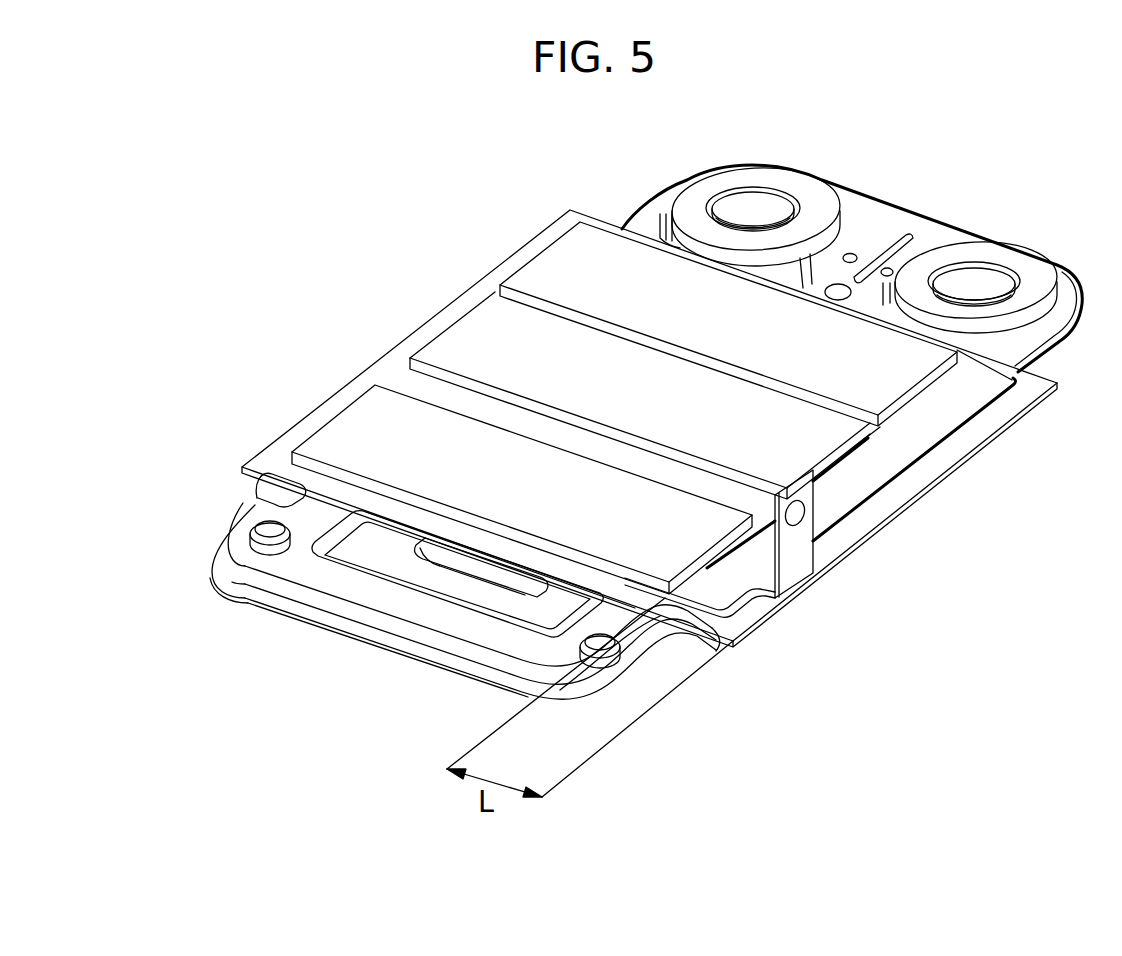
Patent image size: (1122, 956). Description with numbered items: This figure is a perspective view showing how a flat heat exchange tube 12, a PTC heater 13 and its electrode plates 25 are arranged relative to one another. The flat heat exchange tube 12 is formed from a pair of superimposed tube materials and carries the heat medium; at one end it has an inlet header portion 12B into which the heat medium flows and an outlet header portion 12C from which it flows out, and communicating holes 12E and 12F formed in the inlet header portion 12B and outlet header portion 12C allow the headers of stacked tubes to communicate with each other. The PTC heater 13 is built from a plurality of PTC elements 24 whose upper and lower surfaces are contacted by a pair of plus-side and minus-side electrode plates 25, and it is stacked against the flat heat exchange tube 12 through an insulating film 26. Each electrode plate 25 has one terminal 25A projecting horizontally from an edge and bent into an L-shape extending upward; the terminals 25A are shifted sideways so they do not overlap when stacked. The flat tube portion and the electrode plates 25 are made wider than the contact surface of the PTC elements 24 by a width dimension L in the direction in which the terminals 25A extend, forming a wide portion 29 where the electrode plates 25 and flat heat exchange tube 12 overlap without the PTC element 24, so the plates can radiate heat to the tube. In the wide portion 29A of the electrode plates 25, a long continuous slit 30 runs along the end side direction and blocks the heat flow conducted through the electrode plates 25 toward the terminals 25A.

The flat heat exchange tube 12 is at (638, 415).
The inlet header portion 12B is at (748, 180).
The outlet header portion 12C is at (948, 256).
The communicating hole 12E is at (763, 182).
The communicating hole 12F is at (985, 264).
The PTC heater 13 is at (648, 393).
The PTC element 24 is at (545, 264).
The electrode plate 25 is at (770, 546).
The terminal 25A is at (797, 541).
The insulating film 26 is at (292, 446).
The wide portion 29 is at (718, 640).
The wide portion 29A is at (963, 403).
The slit 30 is at (900, 431).